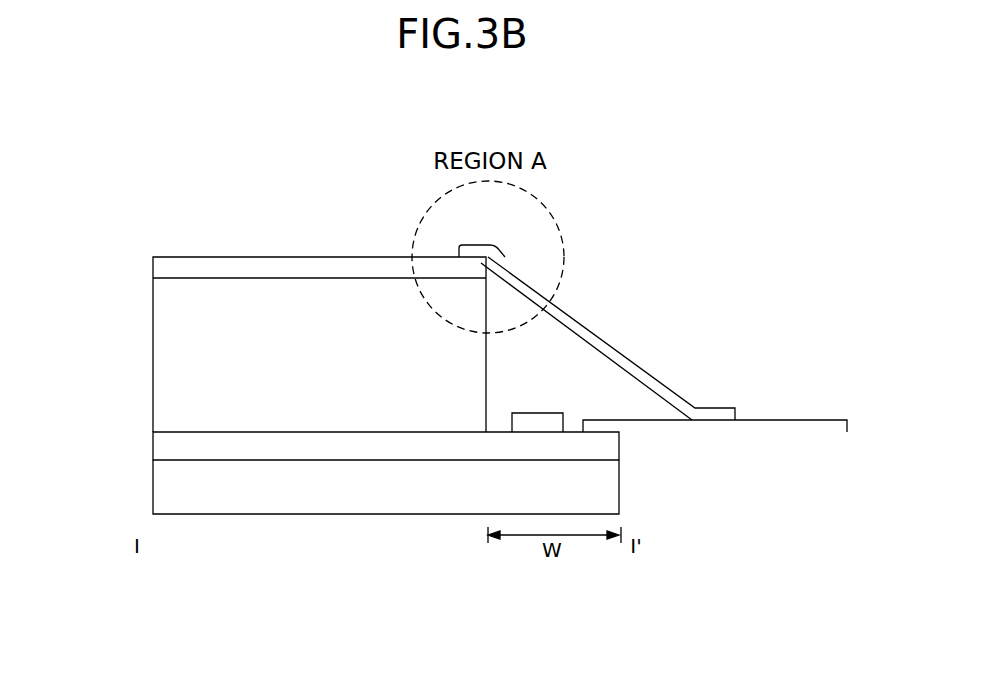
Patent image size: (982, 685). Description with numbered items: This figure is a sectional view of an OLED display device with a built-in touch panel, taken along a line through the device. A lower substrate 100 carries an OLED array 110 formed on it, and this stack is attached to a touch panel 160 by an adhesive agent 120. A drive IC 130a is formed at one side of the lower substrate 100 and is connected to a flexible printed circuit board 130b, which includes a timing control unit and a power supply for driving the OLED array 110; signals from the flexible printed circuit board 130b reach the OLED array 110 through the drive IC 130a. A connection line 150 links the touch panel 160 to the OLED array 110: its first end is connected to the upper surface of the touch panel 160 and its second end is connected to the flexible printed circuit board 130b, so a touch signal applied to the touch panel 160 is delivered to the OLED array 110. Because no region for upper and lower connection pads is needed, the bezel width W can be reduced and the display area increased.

The lower substrate 100 is at (607, 492).
The OLED array 110 is at (607, 452).
The adhesive agent 120 is at (168, 357).
The drive IC 130a is at (535, 420).
The flexible printed circuit board 130b is at (820, 425).
The connection line 150 is at (602, 335).
The touch panel 160 is at (505, 257).